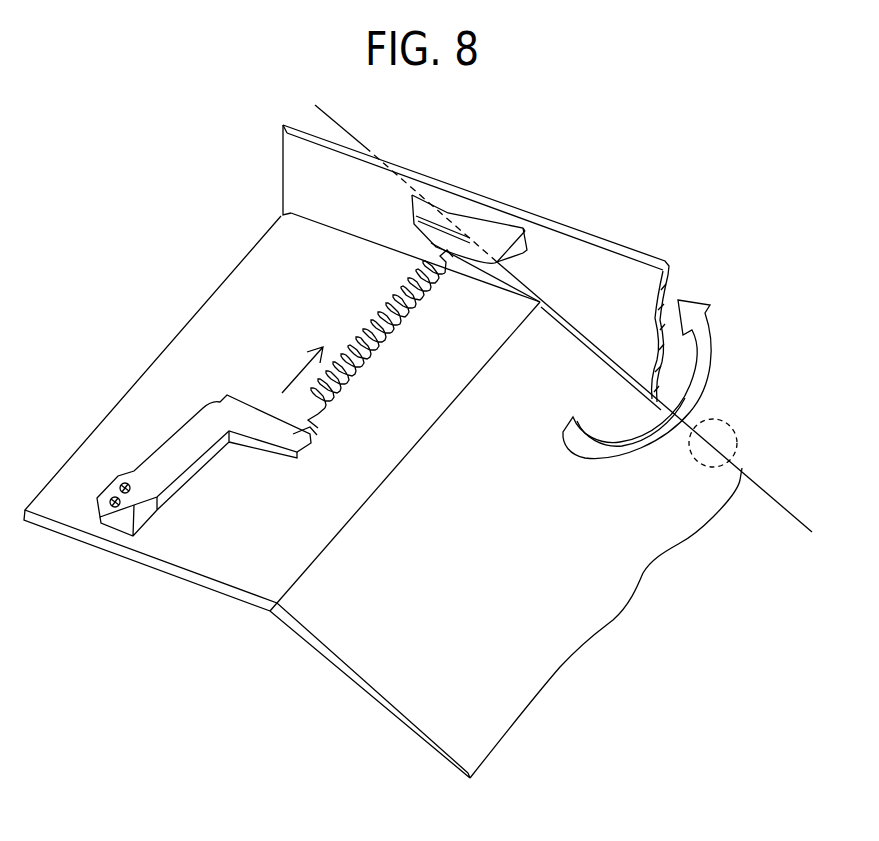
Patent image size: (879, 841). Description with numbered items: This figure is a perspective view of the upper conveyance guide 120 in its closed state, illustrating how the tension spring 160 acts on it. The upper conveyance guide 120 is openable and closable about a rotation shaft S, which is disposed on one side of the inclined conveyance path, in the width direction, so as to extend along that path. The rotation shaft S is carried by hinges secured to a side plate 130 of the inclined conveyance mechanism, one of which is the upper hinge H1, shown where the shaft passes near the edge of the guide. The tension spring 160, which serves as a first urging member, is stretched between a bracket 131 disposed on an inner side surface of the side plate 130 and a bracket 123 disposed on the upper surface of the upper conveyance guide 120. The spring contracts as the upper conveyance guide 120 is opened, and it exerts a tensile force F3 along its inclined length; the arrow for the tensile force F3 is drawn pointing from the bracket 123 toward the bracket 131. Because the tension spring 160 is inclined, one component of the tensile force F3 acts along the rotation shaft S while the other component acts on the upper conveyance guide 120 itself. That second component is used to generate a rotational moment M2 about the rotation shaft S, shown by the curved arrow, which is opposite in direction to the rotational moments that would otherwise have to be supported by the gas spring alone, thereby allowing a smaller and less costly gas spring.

The upper conveyance guide 120 is at (578, 615).
The bracket 123 is at (310, 442).
The side plate 130 is at (602, 258).
The bracket 131 is at (447, 236).
The tension spring 160 is at (392, 296).
The tensile force F3 is at (304, 368).
The rotational moment M2 is at (637, 400).
The upper hinge H1 is at (722, 421).
The rotation shaft S is at (768, 490).